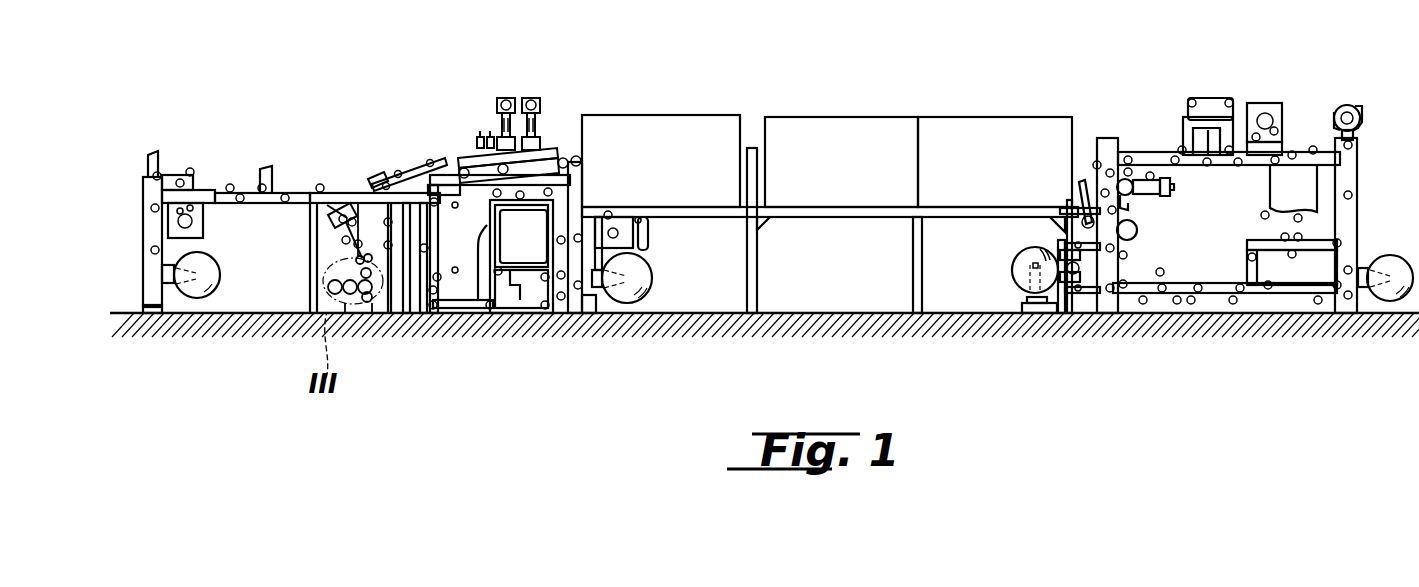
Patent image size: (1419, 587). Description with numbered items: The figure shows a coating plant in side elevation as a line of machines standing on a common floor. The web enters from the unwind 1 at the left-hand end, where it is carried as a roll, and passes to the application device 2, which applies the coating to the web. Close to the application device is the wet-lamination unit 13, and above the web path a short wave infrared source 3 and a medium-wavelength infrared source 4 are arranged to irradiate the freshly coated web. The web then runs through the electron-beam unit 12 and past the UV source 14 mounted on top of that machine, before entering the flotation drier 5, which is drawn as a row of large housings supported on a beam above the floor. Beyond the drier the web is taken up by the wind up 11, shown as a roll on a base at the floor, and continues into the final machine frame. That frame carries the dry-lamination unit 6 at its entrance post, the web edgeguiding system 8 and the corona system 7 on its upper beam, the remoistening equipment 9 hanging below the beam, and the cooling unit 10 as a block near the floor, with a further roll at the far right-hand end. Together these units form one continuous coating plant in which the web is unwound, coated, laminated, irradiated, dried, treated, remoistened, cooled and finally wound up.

The unwind 1 is at (206, 298).
The application device 2 is at (359, 299).
The short wave infrared source 3 is at (380, 176).
The medium-wavelength infrared source 4 is at (422, 160).
The flotation drier 5 is at (688, 130).
The dry-lamination unit 6 is at (1120, 143).
The corona system 7 is at (1265, 112).
The web edgeguiding system 8 is at (1206, 110).
The remoistening equipment 9 is at (1290, 196).
The cooling unit 10 is at (1282, 262).
The wind up 11 is at (1030, 290).
The electron-beam unit 12 is at (526, 250).
The wet-lamination unit 13 is at (344, 208).
The UV source 14 is at (535, 96).